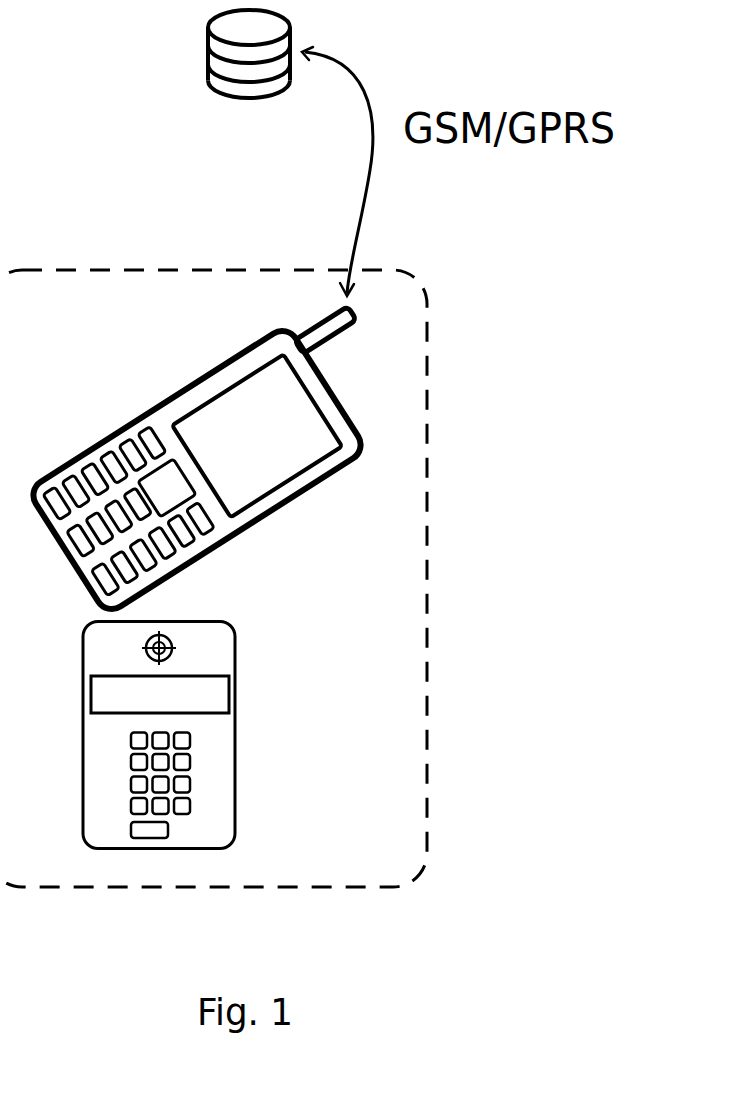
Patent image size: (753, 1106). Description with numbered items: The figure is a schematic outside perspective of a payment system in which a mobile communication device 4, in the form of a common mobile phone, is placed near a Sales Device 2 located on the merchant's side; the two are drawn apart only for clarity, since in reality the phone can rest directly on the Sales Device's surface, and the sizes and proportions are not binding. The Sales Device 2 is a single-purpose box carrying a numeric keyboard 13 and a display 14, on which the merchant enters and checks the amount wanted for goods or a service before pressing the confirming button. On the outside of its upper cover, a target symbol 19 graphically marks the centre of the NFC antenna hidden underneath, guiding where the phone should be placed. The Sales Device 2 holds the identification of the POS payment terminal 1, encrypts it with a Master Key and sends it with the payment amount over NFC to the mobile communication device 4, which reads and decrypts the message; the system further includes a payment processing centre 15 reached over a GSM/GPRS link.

The POS payment terminal 1 is at (427, 451).
The Sales Device 2 is at (236, 637).
The mobile communication device 4 is at (243, 539).
The keyboard 13 is at (182, 783).
The display 14 is at (207, 693).
The payment processing centre 15 is at (212, 80).
The target symbol 19 is at (173, 648).